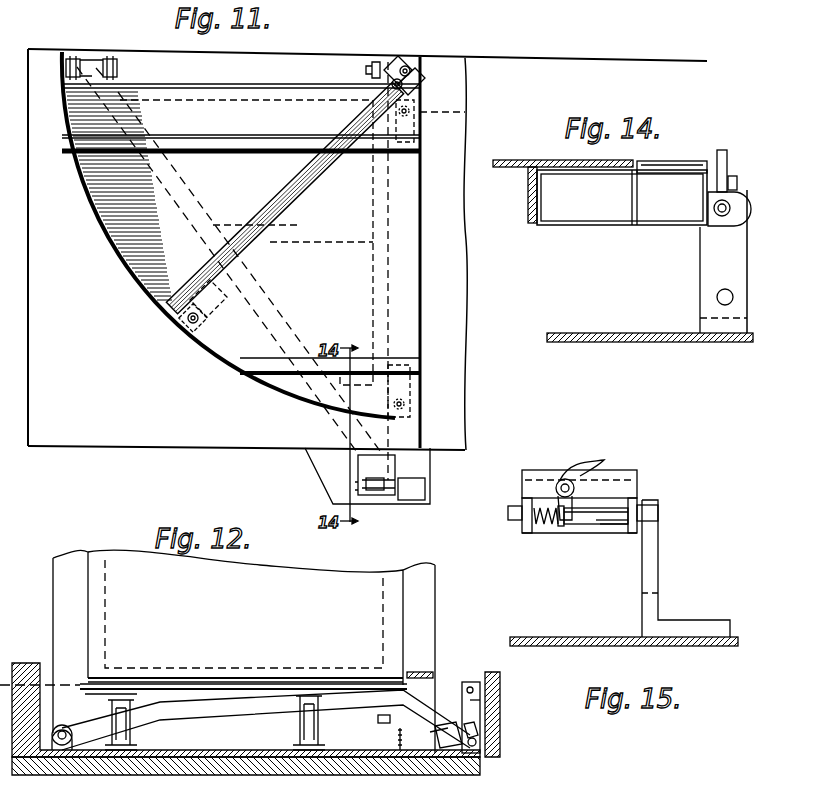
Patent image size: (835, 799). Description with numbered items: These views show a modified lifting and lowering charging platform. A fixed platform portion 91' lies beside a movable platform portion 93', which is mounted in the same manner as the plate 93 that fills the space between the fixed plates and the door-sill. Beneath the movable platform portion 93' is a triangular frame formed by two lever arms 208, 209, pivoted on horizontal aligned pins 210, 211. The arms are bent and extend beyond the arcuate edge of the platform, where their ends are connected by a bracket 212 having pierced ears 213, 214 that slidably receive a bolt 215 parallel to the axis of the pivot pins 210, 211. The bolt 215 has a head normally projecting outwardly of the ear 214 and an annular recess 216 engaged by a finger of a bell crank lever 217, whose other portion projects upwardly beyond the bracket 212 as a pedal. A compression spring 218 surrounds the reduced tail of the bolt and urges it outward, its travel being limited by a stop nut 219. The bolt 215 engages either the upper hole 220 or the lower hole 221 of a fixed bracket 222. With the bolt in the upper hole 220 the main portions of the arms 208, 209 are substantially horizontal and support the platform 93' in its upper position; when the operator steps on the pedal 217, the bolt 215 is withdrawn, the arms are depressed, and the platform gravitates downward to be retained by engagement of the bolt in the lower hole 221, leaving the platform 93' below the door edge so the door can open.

In FIG. 11, the fixed platform portion 91' is at (367, 262).
In FIG. 12, the fixed platform portion 91' is at (244, 651).
In FIG. 11, the movable platform portion 93' is at (228, 235).
In FIG. 12, the plate 93 is at (203, 669).
In FIG. 11, the lever arm 208 is at (272, 310).
In FIG. 12, the lever arm 208 is at (222, 714).
In FIG. 11, the lever arm 209 is at (366, 318).
In FIG. 11, the pivot pin 210 is at (120, 66).
In FIG. 12, the pivot pin 210 is at (62, 746).
In FIG. 11, the pivot pin 211 is at (376, 60).
In FIG. 14, the bracket 212 is at (664, 162).
In FIG. 12, the bracket 212 is at (450, 750).
In FIG. 14, the ear 213 is at (718, 222).
In FIG. 15, the ear 213 is at (525, 532).
In FIG. 12, the ear 213 is at (400, 752).
In FIG. 15, the ear 214 is at (628, 532).
In FIG. 14, the bolt 215 is at (714, 208).
In FIG. 15, the bolt 215 is at (602, 540).
In FIG. 15, the annular recess 216 is at (567, 532).
In FIG. 14, the bell crank lever 217 is at (728, 150).
In FIG. 15, the bell crank lever 217 is at (574, 462).
In FIG. 12, the bell crank lever 217 is at (480, 733).
In FIG. 15, the compression spring 218 is at (546, 532).
In FIG. 15, the stop nut 219 is at (508, 515).
In FIG. 15, the upper hole 220 is at (660, 505).
In FIG. 12, the upper hole 220 is at (472, 680).
In FIG. 14, the lower hole 221 is at (735, 280).
In FIG. 15, the lower hole 221 is at (655, 604).
In FIG. 14, the fixed bracket 222 is at (723, 261).
In FIG. 15, the fixed bracket 222 is at (657, 552).
In FIG. 12, the fixed bracket 222 is at (482, 703).